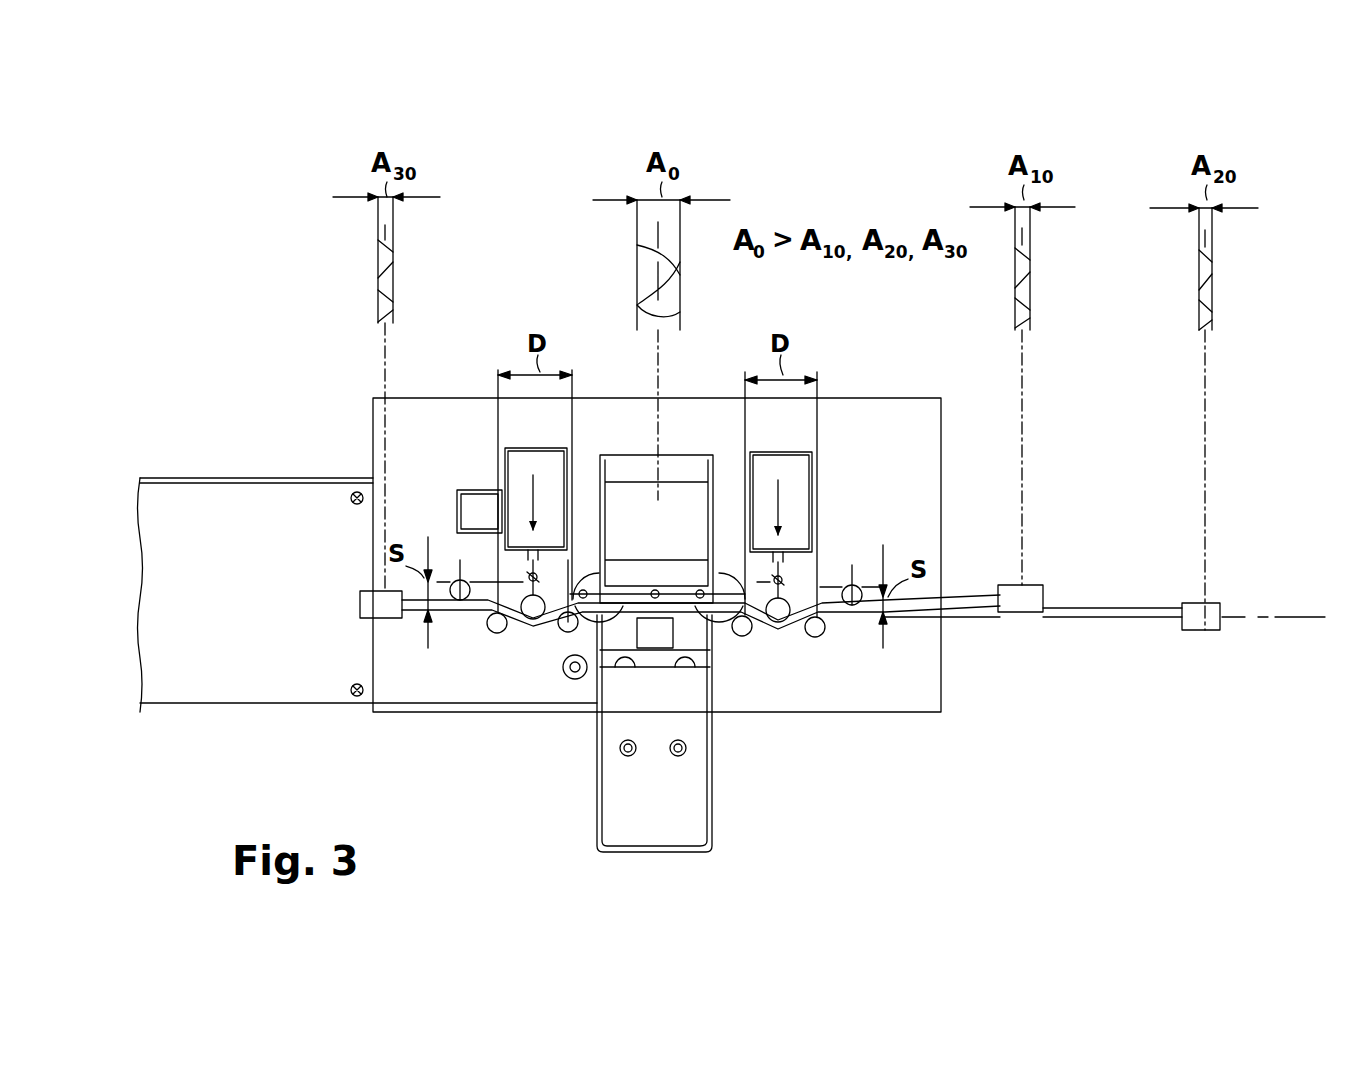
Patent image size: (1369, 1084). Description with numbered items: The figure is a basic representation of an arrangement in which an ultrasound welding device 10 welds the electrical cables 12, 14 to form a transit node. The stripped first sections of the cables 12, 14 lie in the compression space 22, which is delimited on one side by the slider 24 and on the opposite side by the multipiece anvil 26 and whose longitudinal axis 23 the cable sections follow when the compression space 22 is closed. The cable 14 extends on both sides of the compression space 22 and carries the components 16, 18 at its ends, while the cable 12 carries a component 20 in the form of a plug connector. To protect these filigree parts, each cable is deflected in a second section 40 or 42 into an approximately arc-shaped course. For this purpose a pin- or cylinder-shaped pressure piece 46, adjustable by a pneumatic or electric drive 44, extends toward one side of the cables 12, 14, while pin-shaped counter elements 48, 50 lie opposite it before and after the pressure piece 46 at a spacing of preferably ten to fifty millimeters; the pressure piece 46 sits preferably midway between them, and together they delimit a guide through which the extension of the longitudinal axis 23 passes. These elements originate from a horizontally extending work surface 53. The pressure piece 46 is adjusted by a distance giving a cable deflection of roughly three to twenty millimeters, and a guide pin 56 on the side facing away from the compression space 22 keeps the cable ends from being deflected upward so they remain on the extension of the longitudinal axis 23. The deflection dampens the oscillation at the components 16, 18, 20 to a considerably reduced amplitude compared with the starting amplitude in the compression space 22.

The ultrasound welding device 10 is at (262, 375).
The electrical cable 12 is at (1127, 612).
The electrical cable 14 is at (975, 598).
The component 16 is at (1030, 595).
The component 18 is at (360, 604).
The component 20 is at (1208, 607).
The compression space 22 is at (655, 628).
The longitudinal axis 23 is at (1300, 617).
The slider 24 is at (671, 806).
The anvil 26 is at (672, 541).
The second section 40 is at (790, 634).
The second section 42 is at (528, 620).
The drive 44 is at (535, 451).
The pressure piece 46 is at (543, 620).
The counter element 48 is at (568, 633).
The counter element 50 is at (481, 618).
The work surface 53 is at (927, 440).
The guide pin 56 is at (461, 614).